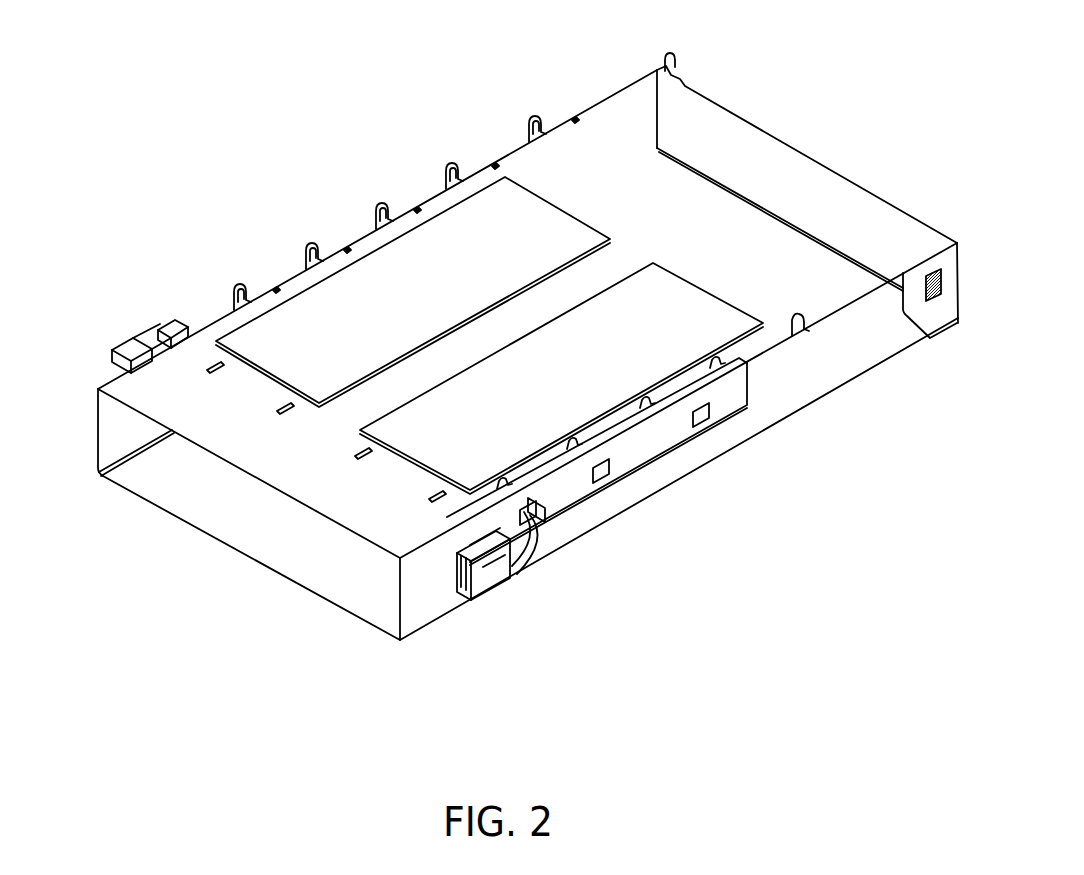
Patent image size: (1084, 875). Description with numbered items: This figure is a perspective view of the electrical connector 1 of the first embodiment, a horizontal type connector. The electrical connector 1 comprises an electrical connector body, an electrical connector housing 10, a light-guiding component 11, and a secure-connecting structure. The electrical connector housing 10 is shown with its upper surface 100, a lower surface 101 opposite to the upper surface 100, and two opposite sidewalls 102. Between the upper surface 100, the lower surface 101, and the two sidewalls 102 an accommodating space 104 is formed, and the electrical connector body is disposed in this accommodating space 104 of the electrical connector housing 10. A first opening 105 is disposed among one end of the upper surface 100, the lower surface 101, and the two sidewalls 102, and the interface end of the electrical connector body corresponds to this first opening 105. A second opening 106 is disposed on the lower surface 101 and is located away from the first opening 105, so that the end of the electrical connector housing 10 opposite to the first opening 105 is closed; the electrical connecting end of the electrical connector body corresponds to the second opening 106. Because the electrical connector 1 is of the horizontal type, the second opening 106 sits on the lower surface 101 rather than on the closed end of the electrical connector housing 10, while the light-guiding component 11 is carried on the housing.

The electrical connector 1 is at (213, 193).
The electrical connector housing 10 is at (268, 290).
The light-guiding component 11 is at (140, 332).
The upper surface 100 is at (708, 218).
The lower surface 101 is at (357, 252).
The sidewalls 102 is at (613, 289).
The accommodating space 104 is at (213, 472).
The first opening 105 is at (277, 561).
The second opening 106 is at (583, 110).